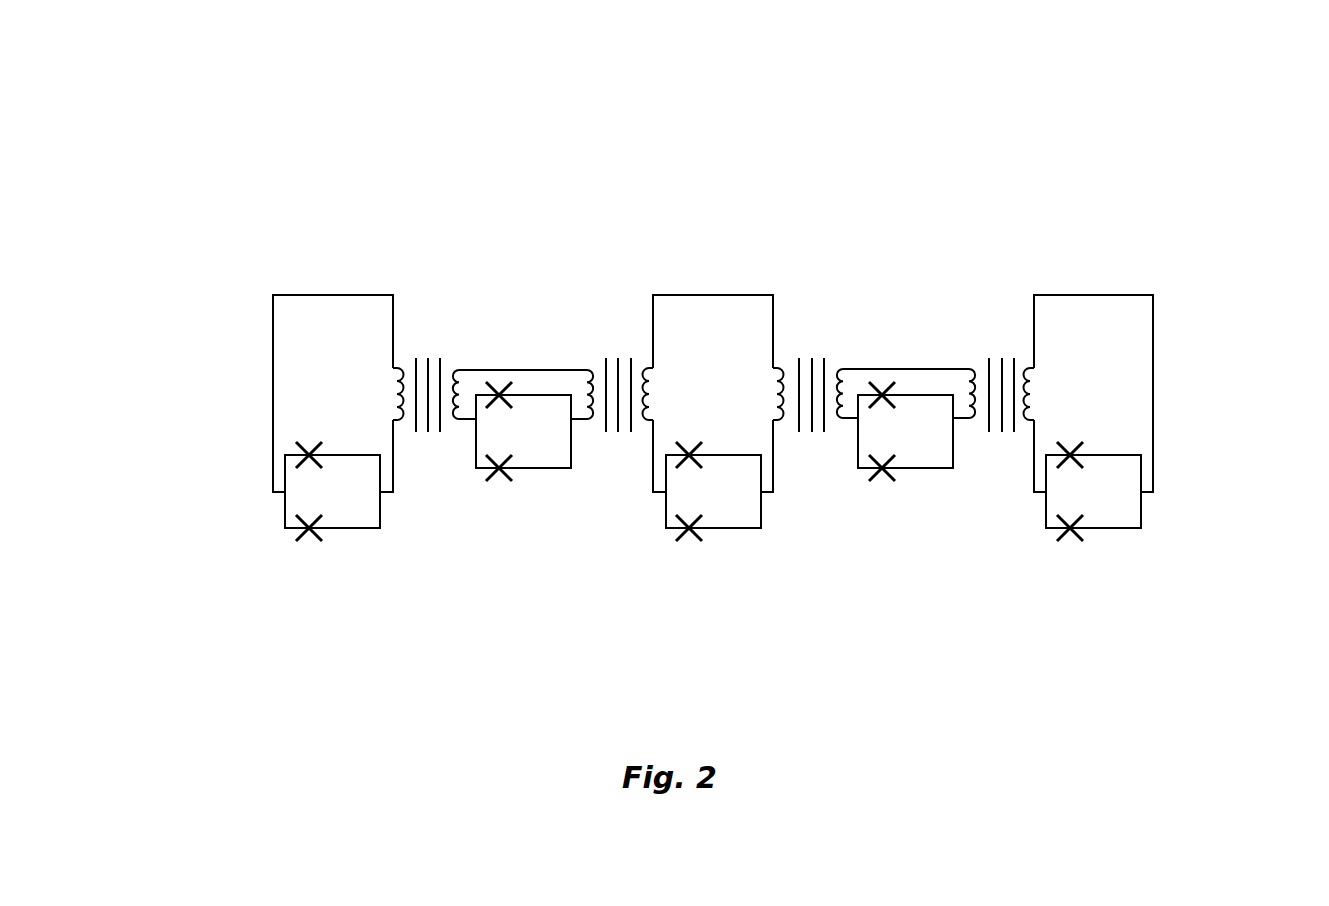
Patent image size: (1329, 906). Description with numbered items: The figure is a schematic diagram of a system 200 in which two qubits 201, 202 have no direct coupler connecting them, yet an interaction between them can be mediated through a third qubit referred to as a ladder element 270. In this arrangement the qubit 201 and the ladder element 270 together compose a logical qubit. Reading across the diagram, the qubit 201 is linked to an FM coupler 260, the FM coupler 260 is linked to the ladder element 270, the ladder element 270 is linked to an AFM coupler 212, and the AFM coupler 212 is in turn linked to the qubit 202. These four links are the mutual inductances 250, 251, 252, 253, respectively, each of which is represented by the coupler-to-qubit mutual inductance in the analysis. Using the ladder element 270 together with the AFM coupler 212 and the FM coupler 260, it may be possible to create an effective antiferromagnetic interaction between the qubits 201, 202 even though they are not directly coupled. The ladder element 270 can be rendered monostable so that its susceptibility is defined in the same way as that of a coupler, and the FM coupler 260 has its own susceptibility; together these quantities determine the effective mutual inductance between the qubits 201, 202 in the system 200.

The system 200 is at (485, 558).
The qubit 201 is at (335, 285).
The qubit 202 is at (1078, 285).
The AFM coupler 212 is at (890, 360).
The mutual inductance 250 is at (430, 345).
The mutual inductance 251 is at (617, 345).
The mutual inductance 252 is at (806, 345).
The mutual inductance 253 is at (997, 345).
The FM coupler 260 is at (512, 362).
The ladder element 270 is at (712, 545).